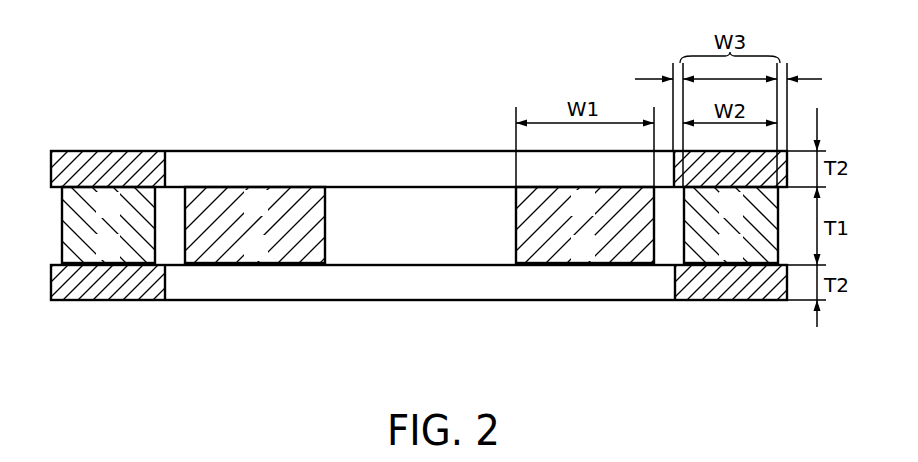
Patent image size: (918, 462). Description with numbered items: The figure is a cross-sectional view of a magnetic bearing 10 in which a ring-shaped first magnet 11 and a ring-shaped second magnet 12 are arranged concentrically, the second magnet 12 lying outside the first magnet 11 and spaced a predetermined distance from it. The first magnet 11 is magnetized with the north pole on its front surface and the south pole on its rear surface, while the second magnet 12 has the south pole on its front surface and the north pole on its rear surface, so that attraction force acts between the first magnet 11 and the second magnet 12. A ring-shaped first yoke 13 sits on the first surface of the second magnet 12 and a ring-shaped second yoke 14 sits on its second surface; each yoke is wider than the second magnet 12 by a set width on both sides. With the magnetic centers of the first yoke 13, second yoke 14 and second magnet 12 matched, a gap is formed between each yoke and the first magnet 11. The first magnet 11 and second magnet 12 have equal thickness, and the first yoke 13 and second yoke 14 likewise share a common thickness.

The magnetic bearing 10 is at (430, 117).
The first magnet 11 is at (325, 229).
The second magnet 12 is at (90, 250).
The first yoke 13 is at (113, 158).
The second yoke 14 is at (140, 292).